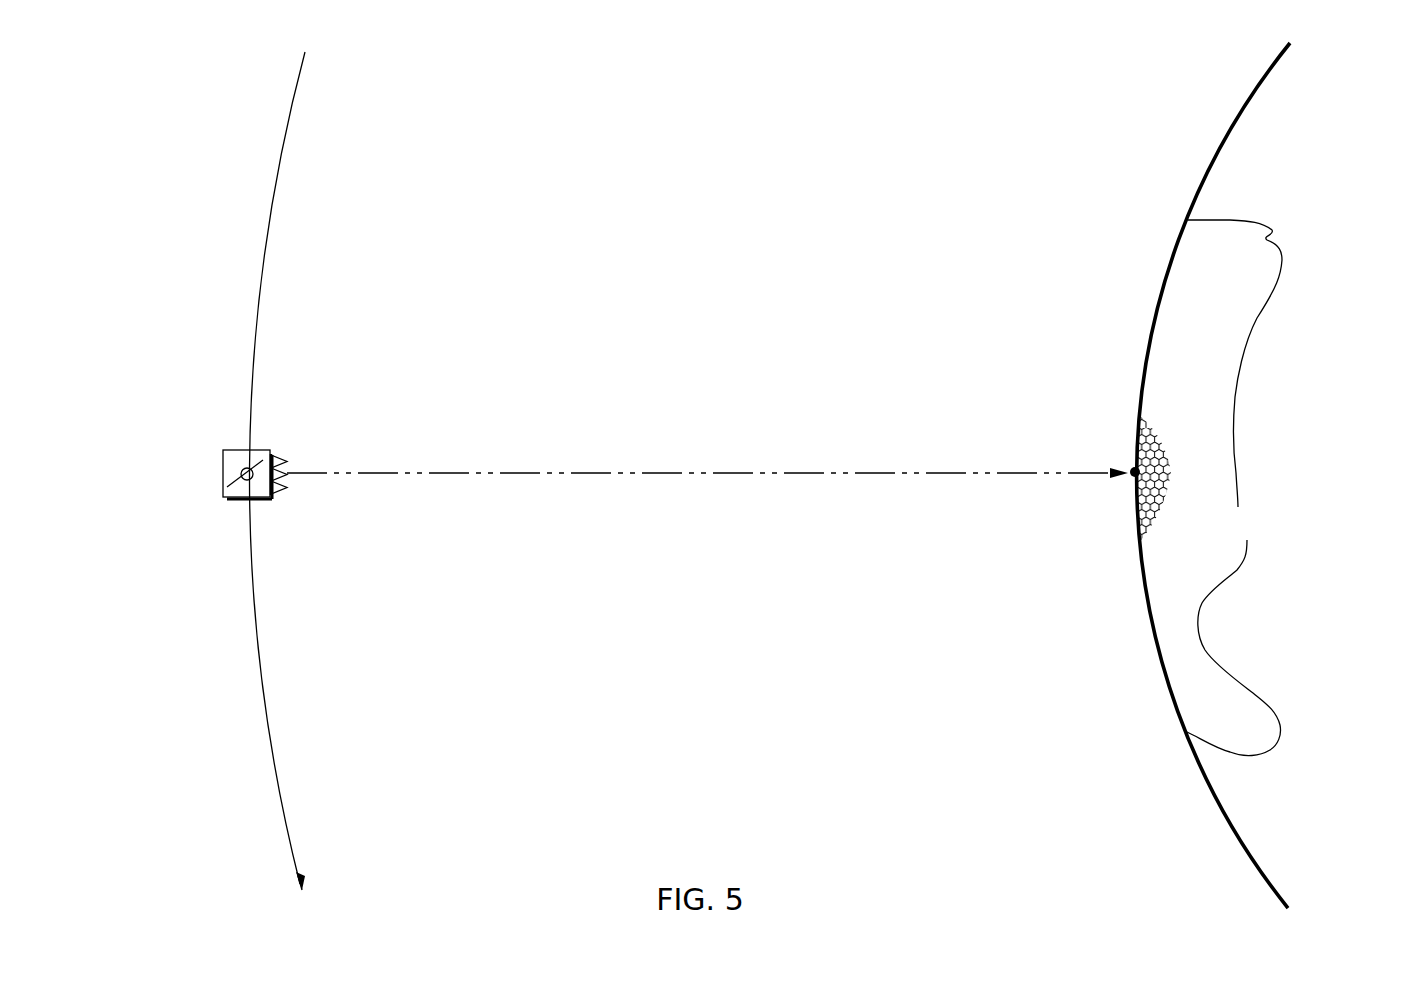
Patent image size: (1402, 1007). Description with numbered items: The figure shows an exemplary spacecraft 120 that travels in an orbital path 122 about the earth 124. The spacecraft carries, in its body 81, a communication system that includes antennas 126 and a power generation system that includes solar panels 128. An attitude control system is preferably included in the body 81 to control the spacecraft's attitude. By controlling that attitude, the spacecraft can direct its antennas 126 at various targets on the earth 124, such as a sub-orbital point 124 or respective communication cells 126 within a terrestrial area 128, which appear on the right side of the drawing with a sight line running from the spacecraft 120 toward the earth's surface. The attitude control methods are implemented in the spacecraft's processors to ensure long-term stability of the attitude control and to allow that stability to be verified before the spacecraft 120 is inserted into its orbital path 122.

The body 81 is at (223, 470).
The spacecraft 120 is at (274, 525).
The orbital path 122 is at (274, 471).
The earth 124 is at (1227, 130).
The antennas 126 is at (287, 460).
The solar panels 128 is at (259, 460).